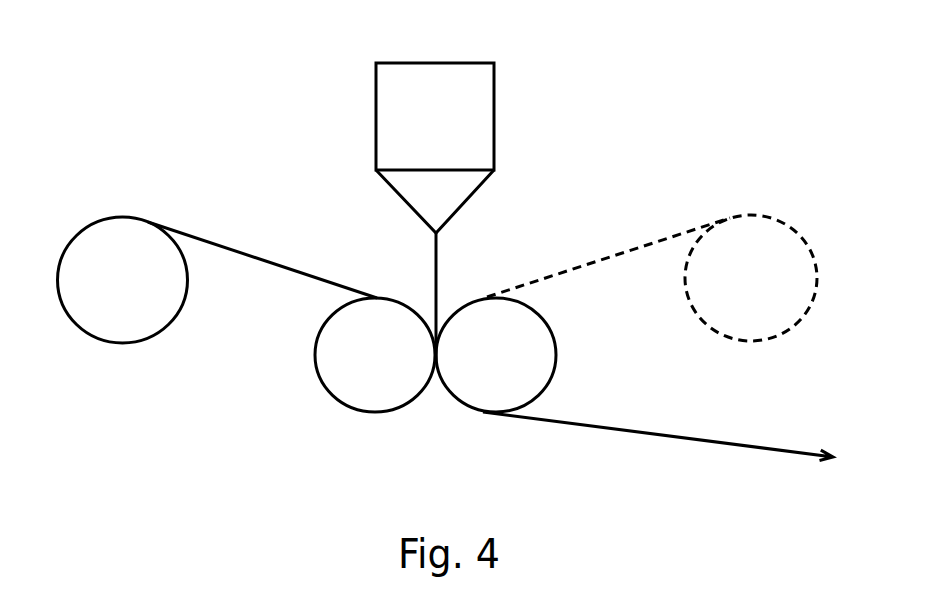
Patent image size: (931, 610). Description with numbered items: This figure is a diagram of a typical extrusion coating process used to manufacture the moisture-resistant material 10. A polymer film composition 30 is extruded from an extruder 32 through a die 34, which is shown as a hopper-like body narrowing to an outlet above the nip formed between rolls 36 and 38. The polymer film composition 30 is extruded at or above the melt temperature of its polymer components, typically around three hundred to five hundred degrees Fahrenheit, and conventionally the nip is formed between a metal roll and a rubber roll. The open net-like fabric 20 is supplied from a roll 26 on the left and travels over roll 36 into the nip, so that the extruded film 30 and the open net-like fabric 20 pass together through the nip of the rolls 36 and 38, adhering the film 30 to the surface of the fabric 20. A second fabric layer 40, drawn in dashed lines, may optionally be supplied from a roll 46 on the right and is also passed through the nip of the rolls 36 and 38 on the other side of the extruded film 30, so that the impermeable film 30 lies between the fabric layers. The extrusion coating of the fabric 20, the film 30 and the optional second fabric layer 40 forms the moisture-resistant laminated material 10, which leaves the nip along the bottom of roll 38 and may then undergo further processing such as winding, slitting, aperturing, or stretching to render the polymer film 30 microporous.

The moisture-resistant material 10 is at (584, 438).
The open net-like fabric 20 is at (271, 244).
The roll 26 is at (117, 243).
The polymer film 30 is at (451, 268).
The extruder 32 is at (482, 113).
The die 34 is at (416, 188).
The roll 36 is at (359, 349).
The roll 38 is at (527, 344).
The second fabric layer 40 is at (630, 233).
The roll 46 is at (762, 249).